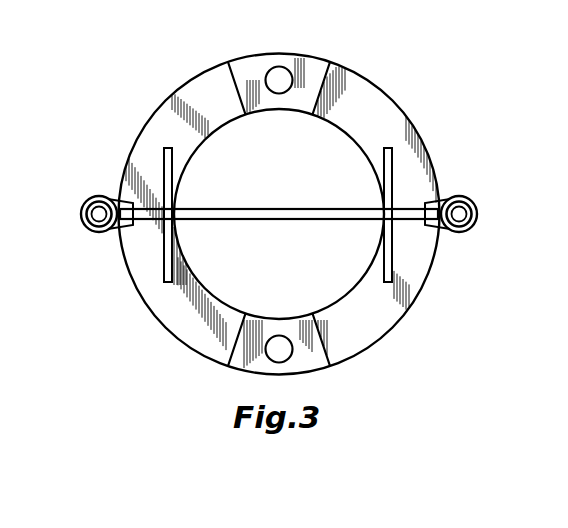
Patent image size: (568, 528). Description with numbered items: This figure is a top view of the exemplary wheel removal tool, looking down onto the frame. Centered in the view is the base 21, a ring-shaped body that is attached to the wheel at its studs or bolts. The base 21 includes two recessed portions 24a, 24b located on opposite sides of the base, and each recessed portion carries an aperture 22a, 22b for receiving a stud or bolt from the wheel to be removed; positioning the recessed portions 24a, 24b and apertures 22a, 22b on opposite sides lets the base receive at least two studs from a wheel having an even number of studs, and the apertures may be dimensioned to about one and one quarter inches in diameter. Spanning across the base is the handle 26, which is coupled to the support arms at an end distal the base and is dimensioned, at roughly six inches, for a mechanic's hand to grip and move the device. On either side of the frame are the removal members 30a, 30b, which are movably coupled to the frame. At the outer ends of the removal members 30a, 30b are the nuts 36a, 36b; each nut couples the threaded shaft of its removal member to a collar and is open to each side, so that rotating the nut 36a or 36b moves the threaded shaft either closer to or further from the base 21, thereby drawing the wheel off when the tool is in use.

The base 21 is at (355, 345).
The aperture 22a is at (280, 93).
The aperture 22b is at (277, 336).
The recessed portion 24a is at (258, 100).
The recessed portion 24b is at (300, 327).
The handle 26 is at (306, 209).
The removal member 30a is at (440, 200).
The removal member 30b is at (119, 197).
The nut 36a is at (476, 208).
The nut 36b is at (82, 208).